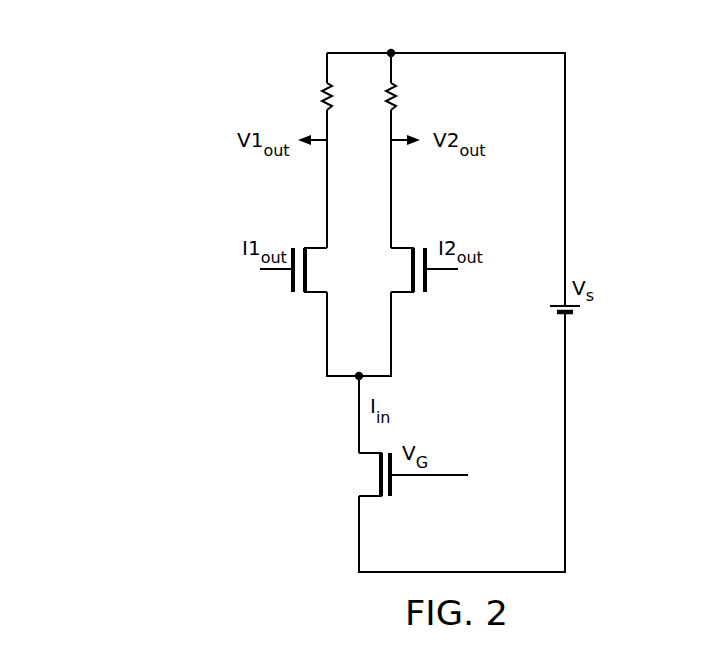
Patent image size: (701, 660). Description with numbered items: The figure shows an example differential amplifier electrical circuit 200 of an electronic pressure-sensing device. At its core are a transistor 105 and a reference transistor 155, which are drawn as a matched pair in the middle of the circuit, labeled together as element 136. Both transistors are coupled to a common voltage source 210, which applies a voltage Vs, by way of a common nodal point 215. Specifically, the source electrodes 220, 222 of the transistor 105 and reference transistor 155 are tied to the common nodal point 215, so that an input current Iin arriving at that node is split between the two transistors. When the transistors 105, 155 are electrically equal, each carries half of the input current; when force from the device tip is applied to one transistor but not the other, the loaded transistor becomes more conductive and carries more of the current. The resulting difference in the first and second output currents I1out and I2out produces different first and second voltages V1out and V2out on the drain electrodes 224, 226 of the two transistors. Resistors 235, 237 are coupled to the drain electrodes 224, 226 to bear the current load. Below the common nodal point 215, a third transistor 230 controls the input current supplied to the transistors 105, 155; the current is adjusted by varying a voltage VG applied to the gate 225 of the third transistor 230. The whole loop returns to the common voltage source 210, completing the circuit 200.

The differential amplifier electrical circuit 200 is at (150, 148).
The resistor 235 is at (322, 92).
The resistor 237 is at (396, 96).
The drain electrode 224 is at (326, 205).
The drain electrode 226 is at (392, 206).
The differential transistor pair 136 is at (380, 283).
The transistor 105 is at (292, 280).
The reference transistor 155 is at (427, 282).
The source electrode 220 is at (326, 335).
The source electrode 222 is at (392, 335).
The common nodal point 215 is at (357, 380).
The gate 225 is at (444, 471).
The third transistor 230 is at (395, 485).
The common voltage source 210 is at (567, 314).